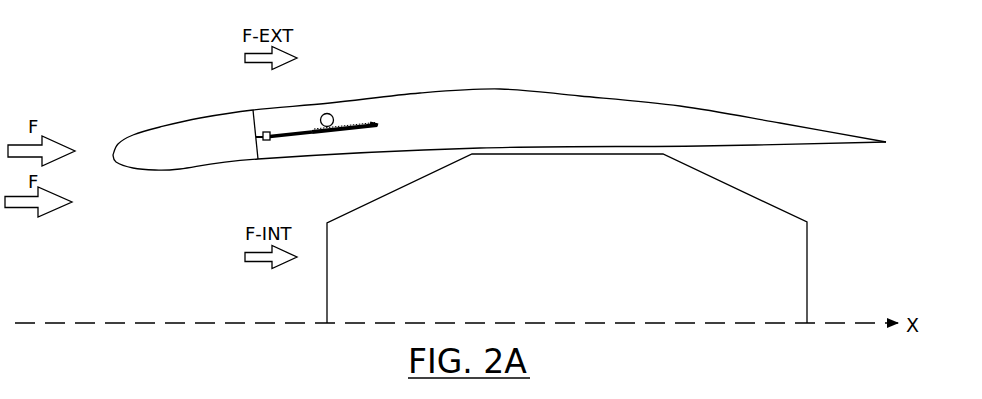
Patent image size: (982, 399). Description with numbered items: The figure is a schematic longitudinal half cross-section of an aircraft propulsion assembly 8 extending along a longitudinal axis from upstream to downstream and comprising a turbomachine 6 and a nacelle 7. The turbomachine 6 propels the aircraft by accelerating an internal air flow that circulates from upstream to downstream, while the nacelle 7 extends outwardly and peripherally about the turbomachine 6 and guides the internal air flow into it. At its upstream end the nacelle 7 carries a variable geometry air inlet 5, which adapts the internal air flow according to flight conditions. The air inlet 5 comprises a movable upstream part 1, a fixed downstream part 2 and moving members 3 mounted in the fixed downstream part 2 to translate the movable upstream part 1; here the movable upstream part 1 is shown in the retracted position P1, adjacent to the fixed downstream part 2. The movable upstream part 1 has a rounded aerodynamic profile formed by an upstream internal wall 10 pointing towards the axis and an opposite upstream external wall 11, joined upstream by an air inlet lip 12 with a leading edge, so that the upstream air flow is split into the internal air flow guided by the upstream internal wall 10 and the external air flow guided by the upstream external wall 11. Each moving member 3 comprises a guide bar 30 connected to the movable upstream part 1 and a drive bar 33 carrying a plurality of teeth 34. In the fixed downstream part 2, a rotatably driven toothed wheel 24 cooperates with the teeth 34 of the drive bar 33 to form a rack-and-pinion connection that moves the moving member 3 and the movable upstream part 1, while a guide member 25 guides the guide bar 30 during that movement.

The movable upstream part 1 is at (218, 116).
The fixed downstream part 2 is at (268, 105).
The moving member 3 is at (284, 143).
The variable geometry air inlet 5 is at (203, 52).
The turbomachine 6 is at (606, 151).
The nacelle 7 is at (578, 91).
The aircraft propulsion assembly 8 is at (677, 41).
The upstream internal wall 10 is at (172, 168).
The upstream external wall 11 is at (158, 128).
The air inlet lip 12 is at (114, 158).
The toothed wheel 24 is at (329, 113).
The guide member 25 is at (272, 130).
The guide bar 30 is at (302, 134).
The drive bar 33 is at (354, 131).
The teeth 34 is at (378, 122).
The retracted position P1 is at (865, 36).